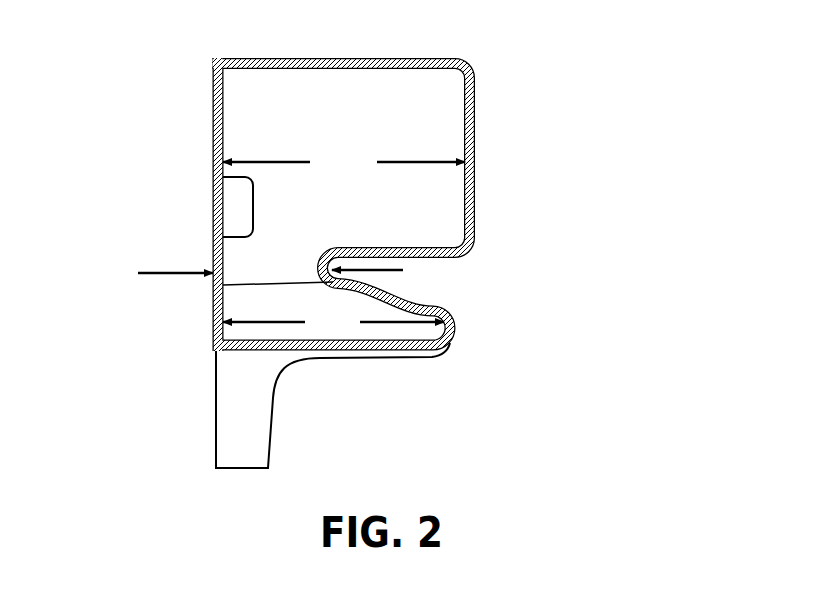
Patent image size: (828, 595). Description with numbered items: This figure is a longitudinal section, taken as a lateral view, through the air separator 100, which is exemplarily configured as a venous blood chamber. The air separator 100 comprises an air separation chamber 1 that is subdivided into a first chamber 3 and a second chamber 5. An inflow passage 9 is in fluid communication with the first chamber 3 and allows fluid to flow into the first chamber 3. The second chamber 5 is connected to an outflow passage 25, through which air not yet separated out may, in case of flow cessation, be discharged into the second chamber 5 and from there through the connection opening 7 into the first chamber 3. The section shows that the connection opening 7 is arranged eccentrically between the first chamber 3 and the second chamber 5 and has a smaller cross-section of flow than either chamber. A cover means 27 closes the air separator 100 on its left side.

The air separation chamber 1 is at (475, 100).
The first chamber 3 is at (272, 105).
The second chamber 5 is at (252, 333).
The connection opening 7 is at (257, 273).
The inflow passage 9 is at (238, 215).
The outflow passage 25 is at (227, 447).
The cover means 27 is at (213, 122).
The air separator 100 is at (500, 202).